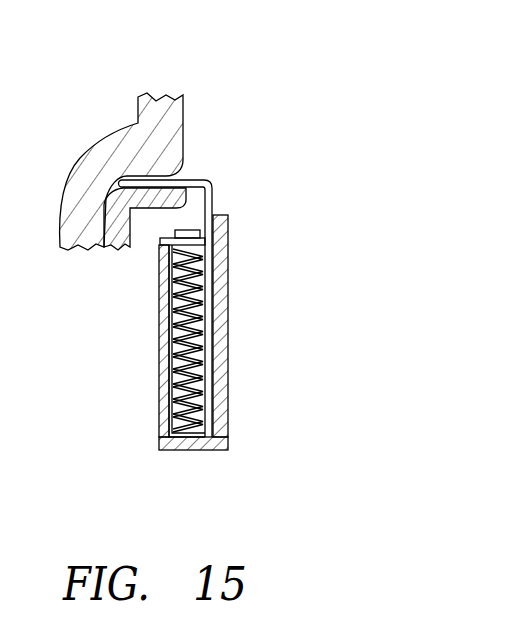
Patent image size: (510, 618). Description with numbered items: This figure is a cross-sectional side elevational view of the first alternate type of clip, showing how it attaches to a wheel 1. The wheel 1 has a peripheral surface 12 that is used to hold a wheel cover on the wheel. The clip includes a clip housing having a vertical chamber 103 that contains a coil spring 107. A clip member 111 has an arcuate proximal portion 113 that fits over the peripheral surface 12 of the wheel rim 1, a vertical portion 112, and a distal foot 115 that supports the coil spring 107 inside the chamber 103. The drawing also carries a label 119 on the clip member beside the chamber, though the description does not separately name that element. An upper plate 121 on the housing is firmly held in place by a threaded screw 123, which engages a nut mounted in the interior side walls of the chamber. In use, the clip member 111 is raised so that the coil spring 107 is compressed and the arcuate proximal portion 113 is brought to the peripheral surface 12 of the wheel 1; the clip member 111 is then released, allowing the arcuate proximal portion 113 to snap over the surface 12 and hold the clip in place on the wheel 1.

The wheel 1 is at (101, 273).
The peripheral surface 12 is at (185, 177).
The arcuate proximal portion 113 is at (208, 177).
The threaded screw 123 is at (214, 201).
The bracket lower leg 119 is at (213, 366).
The vertical portion 112 is at (222, 300).
The upper plate 121 is at (160, 239).
The distal foot 115 is at (196, 438).
The vertical chamber 103 is at (206, 412).
The clip member 111 is at (190, 231).
The coil spring 107 is at (195, 335).